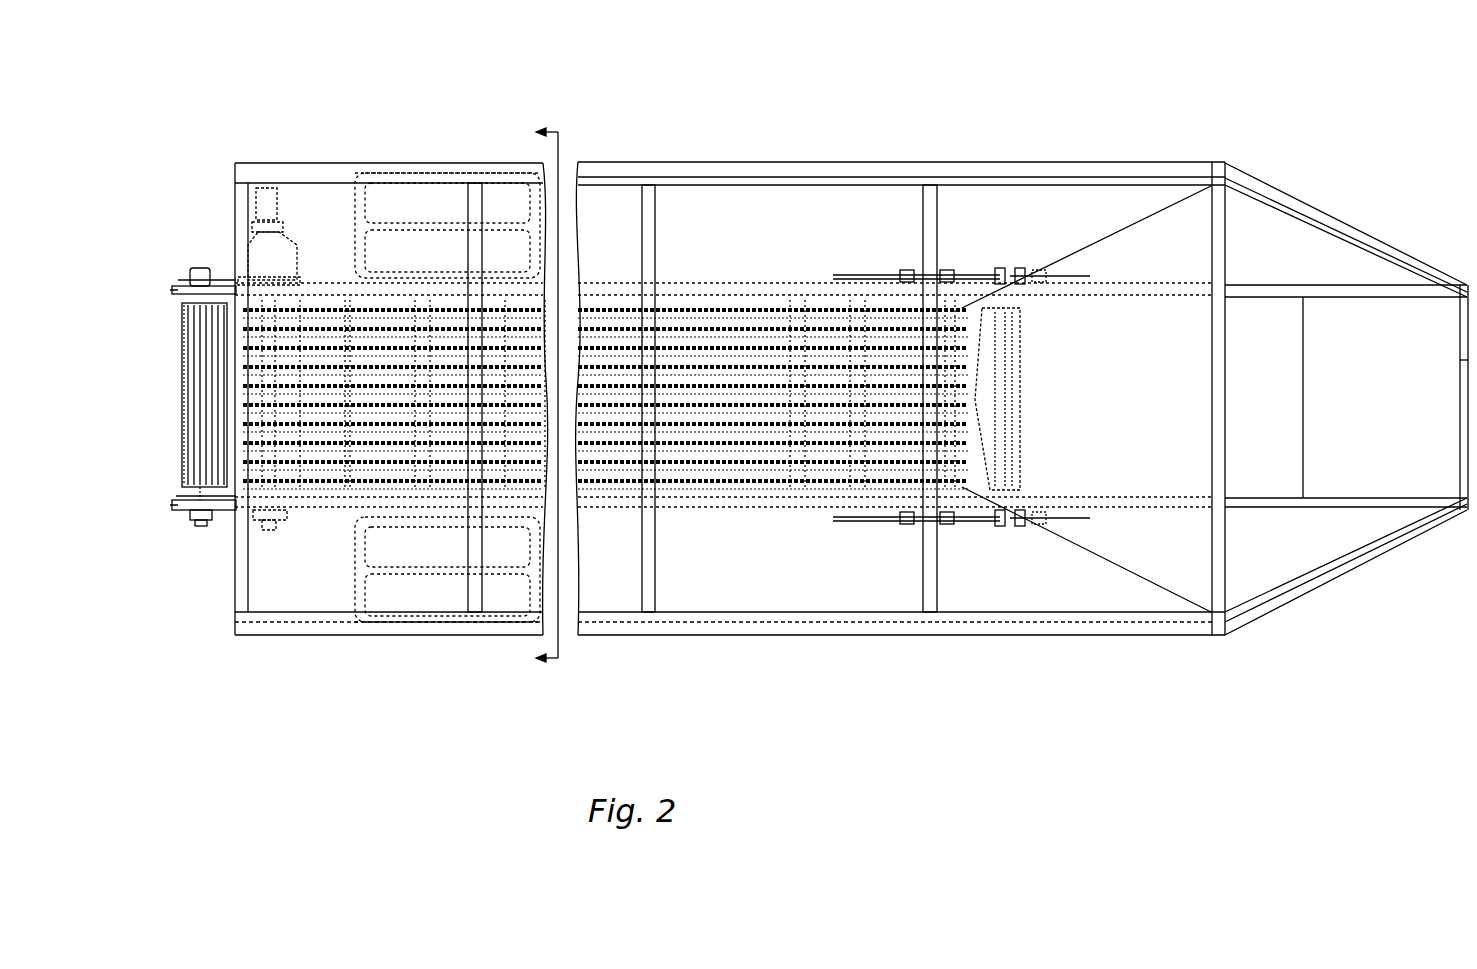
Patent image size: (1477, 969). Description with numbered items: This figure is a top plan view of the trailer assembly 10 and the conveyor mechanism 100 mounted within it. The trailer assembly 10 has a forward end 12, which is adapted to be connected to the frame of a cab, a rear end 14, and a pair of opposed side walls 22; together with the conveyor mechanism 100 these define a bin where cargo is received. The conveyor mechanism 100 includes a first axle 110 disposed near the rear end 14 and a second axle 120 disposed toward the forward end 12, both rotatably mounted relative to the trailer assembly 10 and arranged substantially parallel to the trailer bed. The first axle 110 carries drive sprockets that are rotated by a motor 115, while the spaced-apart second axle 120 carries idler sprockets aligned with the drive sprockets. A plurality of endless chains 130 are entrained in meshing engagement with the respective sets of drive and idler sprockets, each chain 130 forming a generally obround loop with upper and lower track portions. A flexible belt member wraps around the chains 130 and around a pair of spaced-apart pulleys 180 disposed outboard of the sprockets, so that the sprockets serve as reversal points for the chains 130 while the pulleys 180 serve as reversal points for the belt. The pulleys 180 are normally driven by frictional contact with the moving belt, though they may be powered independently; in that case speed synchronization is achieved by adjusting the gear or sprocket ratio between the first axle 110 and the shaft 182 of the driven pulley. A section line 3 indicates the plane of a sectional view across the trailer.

The section line 3- 3 is at (536, 395).
The trailer assembly 10 is at (1216, 102).
The forward end 12 is at (1476, 260).
The rear end 14 is at (233, 600).
The side walls 22 is at (834, 162).
The conveyor mechanism 100 is at (718, 252).
The first axle 110 is at (264, 532).
The motor 115 is at (248, 243).
The second axle 120 is at (952, 492).
The endless chains 130 is at (718, 443).
The pulleys 180 is at (174, 408).
The shaft 182 is at (203, 527).